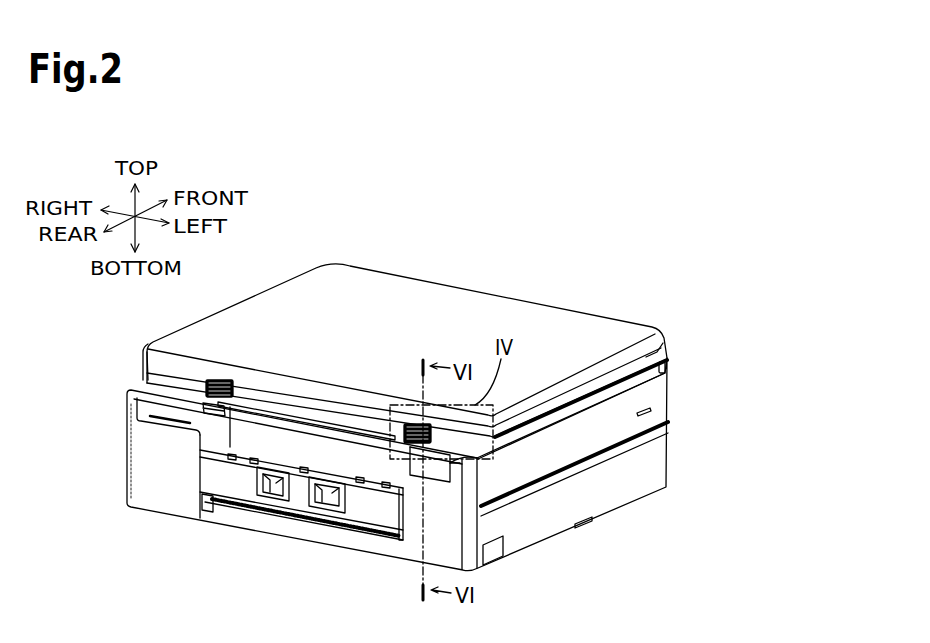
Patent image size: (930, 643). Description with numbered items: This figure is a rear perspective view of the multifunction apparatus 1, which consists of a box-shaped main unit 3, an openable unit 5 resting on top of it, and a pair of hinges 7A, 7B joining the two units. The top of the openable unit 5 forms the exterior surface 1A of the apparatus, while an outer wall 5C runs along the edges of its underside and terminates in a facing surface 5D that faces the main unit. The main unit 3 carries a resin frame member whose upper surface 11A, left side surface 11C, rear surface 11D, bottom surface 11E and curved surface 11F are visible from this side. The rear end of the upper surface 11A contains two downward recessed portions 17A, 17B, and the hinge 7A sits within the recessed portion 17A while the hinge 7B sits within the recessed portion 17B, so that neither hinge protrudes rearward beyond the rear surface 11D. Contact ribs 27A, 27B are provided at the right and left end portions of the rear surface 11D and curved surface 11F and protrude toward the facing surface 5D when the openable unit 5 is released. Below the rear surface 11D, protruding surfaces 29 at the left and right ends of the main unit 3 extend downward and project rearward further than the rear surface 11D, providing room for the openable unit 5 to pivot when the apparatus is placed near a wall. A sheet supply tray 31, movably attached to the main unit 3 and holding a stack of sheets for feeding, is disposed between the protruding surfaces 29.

The multifunction apparatus 1 is at (654, 303).
The exterior surface 1A is at (463, 317).
The main unit 3 is at (160, 400).
The openable unit 5 is at (346, 277).
The outer wall 5C is at (648, 357).
The facing surface 5D is at (527, 428).
The hinge 7A is at (219, 416).
The hinge 7B is at (414, 446).
The upper surface 11A is at (600, 373).
The left side surface 11C is at (650, 395).
The rear surface 11D is at (285, 407).
The bottom surface 11E is at (577, 462).
The curved surface 11F is at (348, 416).
The recessed portion 17A is at (199, 402).
The recessed portion 17B is at (400, 466).
The contact rib 27A is at (153, 378).
The contact rib 27B is at (461, 443).
The protruding surface 29 is at (157, 473).
The sheet supply tray 31 is at (290, 456).